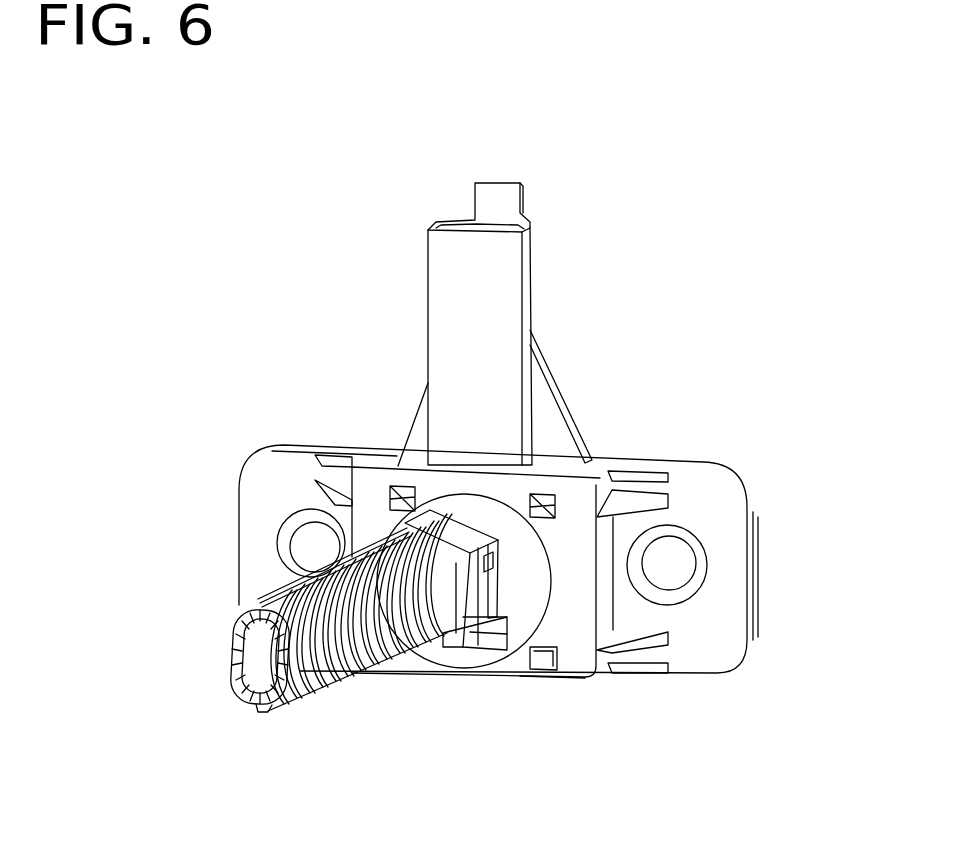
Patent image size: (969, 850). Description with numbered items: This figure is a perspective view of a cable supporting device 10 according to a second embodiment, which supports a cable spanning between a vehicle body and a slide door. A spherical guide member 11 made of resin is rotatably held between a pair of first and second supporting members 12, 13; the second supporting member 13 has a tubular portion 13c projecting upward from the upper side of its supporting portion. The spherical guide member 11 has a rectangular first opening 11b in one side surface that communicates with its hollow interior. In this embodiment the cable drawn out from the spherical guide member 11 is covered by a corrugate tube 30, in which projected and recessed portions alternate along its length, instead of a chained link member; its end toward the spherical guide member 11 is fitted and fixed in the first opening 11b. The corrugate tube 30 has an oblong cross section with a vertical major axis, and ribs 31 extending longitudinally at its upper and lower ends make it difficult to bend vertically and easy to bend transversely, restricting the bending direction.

The cable supporting device 10 is at (255, 413).
The spherical guide member 11 is at (506, 645).
The first opening 11b is at (400, 543).
The first supporting member 12 is at (576, 680).
The second supporting member 13 is at (750, 577).
The tubular portion 13c is at (505, 323).
The corrugate tube 30 is at (332, 683).
The rib 31 is at (285, 590).